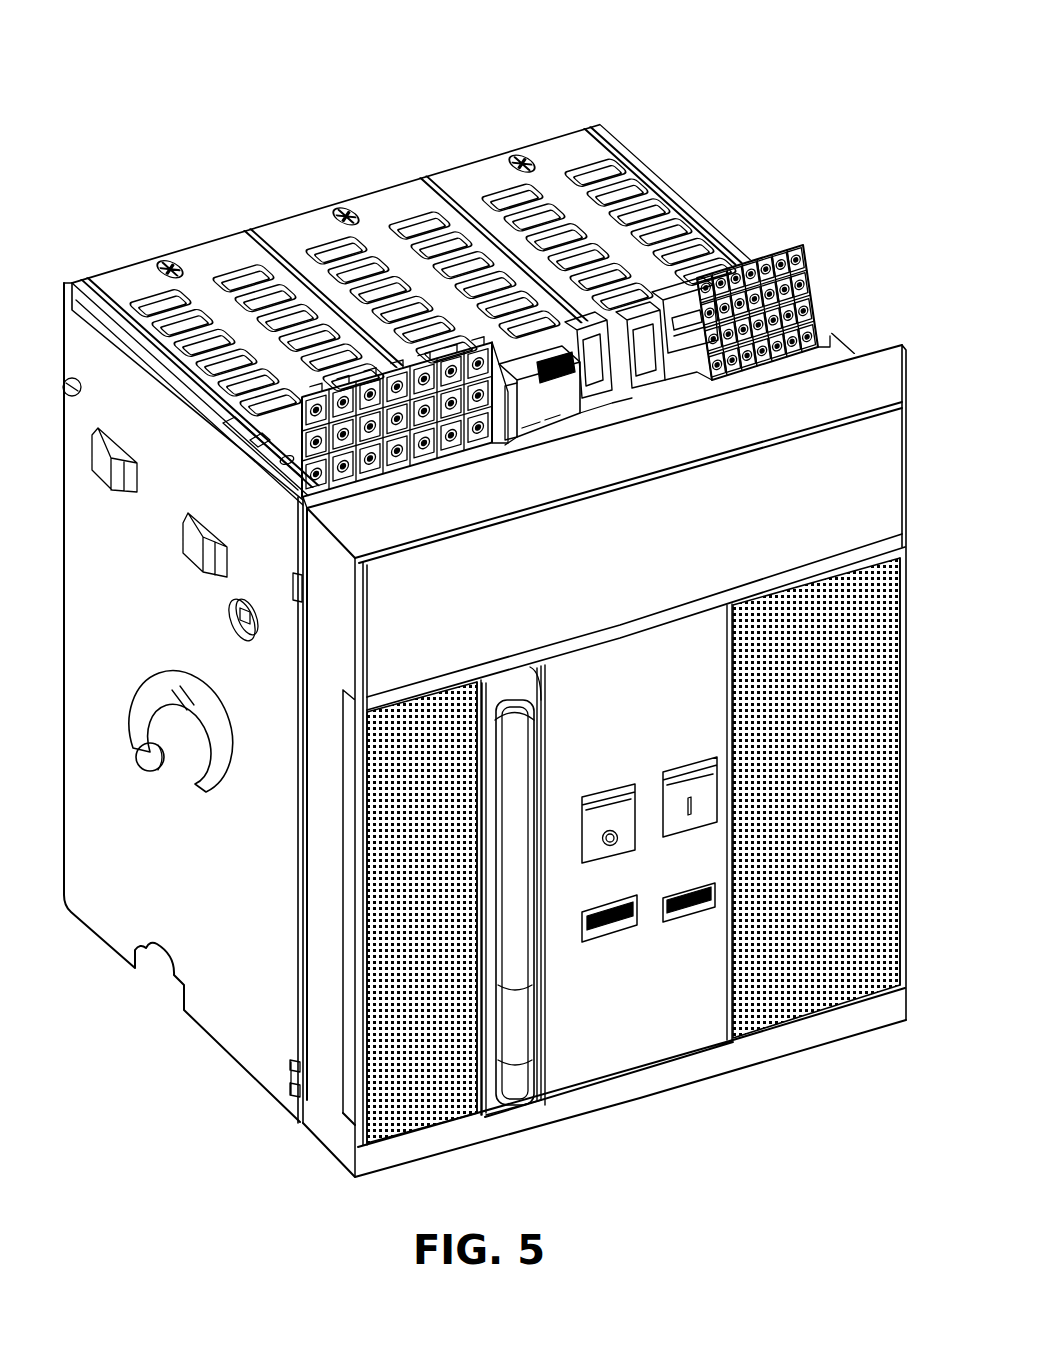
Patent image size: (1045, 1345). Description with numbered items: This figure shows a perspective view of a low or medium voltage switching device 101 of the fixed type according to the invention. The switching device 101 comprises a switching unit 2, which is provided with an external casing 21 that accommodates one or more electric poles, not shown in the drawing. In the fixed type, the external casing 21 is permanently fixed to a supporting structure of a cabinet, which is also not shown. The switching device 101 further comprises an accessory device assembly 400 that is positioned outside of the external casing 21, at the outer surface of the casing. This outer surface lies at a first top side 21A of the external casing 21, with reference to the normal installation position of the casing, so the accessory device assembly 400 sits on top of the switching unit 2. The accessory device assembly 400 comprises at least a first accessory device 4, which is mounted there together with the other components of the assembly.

The switching unit 2 is at (190, 228).
The external casing 21 is at (222, 1003).
The first top side 21A is at (556, 160).
The switching device of the fixed type 101 is at (750, 116).
The first accessory device 4 is at (568, 402).
The accessory device assembly 400 is at (624, 418).